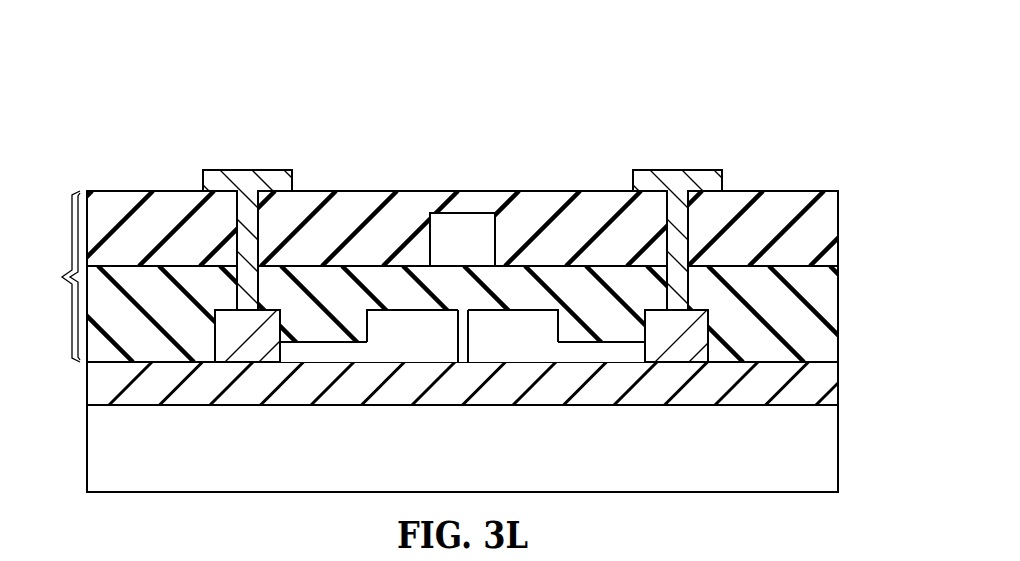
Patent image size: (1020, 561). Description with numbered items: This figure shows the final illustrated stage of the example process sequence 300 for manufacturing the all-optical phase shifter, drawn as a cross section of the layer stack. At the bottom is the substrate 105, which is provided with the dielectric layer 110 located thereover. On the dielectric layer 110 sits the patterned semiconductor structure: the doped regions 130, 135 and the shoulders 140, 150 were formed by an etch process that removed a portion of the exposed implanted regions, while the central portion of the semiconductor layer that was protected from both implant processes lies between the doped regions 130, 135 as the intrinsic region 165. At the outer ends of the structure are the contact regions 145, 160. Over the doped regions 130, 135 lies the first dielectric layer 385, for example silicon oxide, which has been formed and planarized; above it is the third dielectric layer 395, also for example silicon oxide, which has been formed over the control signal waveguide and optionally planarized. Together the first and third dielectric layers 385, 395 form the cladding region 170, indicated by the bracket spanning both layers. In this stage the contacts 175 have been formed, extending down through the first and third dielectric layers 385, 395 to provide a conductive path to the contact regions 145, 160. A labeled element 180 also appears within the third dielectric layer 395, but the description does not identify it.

The process sequence 300 is at (197, 87).
The substrate 105 is at (830, 450).
The dielectric layer 110 is at (830, 395).
The doped region 130 is at (518, 335).
The doped region 135 is at (378, 335).
The shoulder 140 is at (617, 355).
The contact region 145 is at (672, 355).
The shoulder 150 is at (327, 355).
The contact region 160 is at (262, 353).
The intrinsic region 165 is at (463, 352).
The cladding region 170 is at (50, 276).
The contacts 175 is at (247, 178).
The cavity 180 is at (483, 252).
The first dielectric layer 385 is at (830, 300).
The third dielectric layer 395 is at (119, 198).